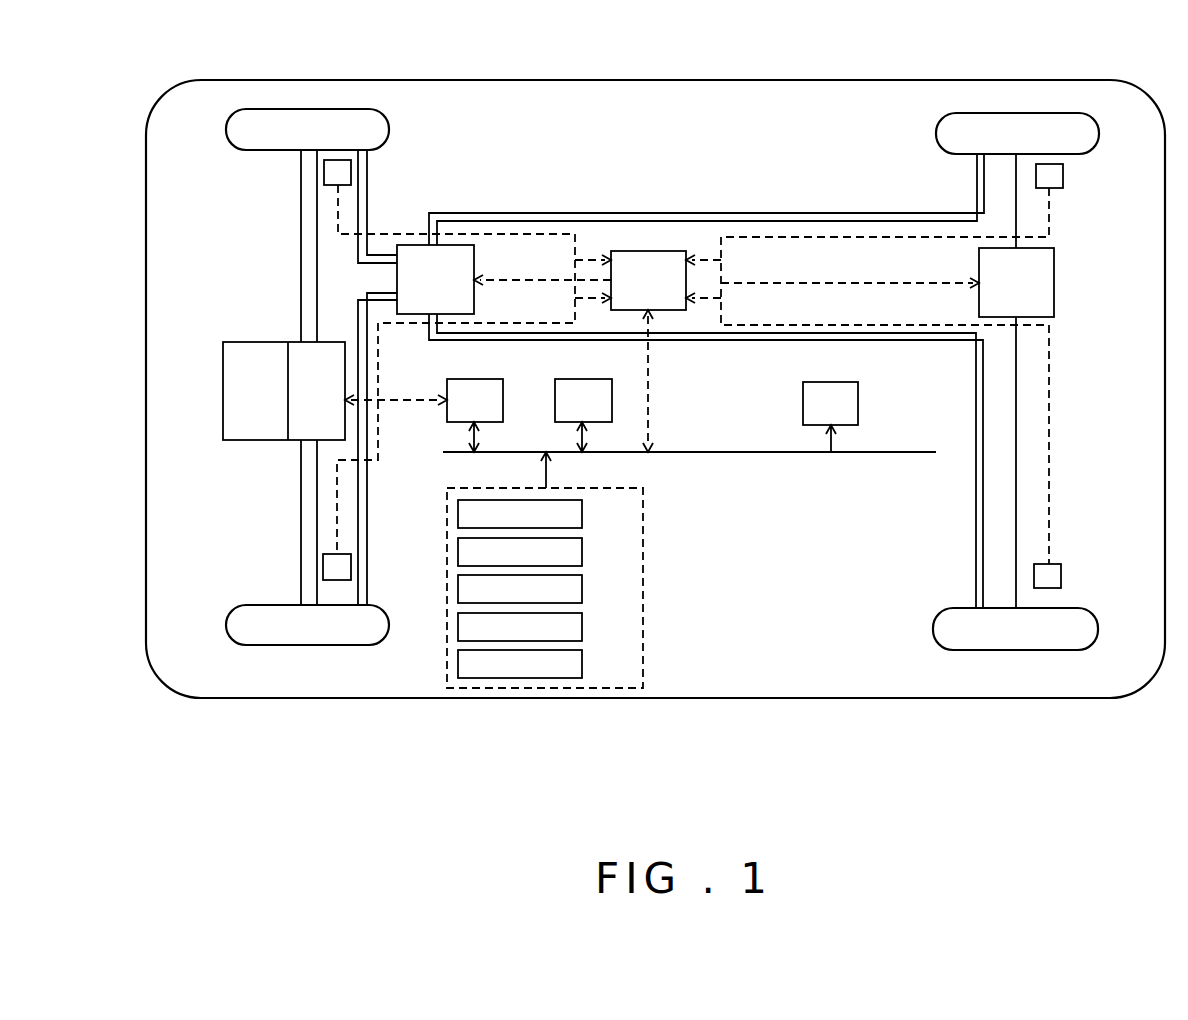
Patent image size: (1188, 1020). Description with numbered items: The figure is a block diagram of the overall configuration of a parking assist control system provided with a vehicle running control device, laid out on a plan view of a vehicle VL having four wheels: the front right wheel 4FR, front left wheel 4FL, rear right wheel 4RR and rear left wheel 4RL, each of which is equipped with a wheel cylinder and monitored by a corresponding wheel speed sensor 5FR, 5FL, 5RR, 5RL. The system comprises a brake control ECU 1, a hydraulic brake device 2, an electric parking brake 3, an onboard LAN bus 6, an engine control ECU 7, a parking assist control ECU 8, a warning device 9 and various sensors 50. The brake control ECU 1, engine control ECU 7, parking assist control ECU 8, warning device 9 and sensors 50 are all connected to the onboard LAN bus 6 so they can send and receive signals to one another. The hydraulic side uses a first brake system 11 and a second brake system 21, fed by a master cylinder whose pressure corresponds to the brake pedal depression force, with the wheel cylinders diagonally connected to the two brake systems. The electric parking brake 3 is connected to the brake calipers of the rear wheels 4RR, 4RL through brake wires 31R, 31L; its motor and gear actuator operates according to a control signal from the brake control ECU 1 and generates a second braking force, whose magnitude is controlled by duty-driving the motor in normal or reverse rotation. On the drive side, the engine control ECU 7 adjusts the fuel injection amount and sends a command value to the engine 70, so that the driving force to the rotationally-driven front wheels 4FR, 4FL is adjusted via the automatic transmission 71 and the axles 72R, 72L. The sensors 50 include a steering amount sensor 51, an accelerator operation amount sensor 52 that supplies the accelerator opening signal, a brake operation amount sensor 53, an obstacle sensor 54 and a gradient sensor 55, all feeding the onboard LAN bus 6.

The vehicle VL is at (741, 76).
The brake control ECU 1 is at (646, 251).
The hydraulic brake device 2 is at (405, 245).
The electric parking brake 3 is at (1054, 258).
The front right wheel 4FR is at (300, 109).
The front left wheel 4FL is at (300, 645).
The rear right wheel 4RR is at (1010, 113).
The rear left wheel 4RL is at (1010, 650).
The front right wheel speed sensor 5FR is at (324, 174).
The front left wheel speed sensor 5FL is at (323, 572).
The rear right wheel speed sensor 5RR is at (1063, 176).
The rear left wheel speed sensor 5RL is at (1061, 575).
The onboard LAN bus 6 is at (886, 452).
The engine control ECU 7 is at (480, 379).
The parking assist control ECU 8 is at (586, 379).
The warning device 9 is at (838, 382).
The first brake system 11 is at (367, 166).
The second brake system 21 is at (977, 192).
The brake wire 31R is at (1016, 212).
The brake wire 31L is at (1016, 502).
The sensors 50 is at (447, 536).
The steering amount sensor 51 is at (582, 514).
The accelerator operation amount sensor 52 is at (582, 552).
The brake operation amount sensor 53 is at (582, 589).
The obstacle sensor 54 is at (582, 627).
The gradient sensor 55 is at (582, 664).
The engine 70 is at (223, 395).
The automatic transmission 71 is at (290, 342).
The axle 72R is at (301, 230).
The axle 72L is at (301, 518).